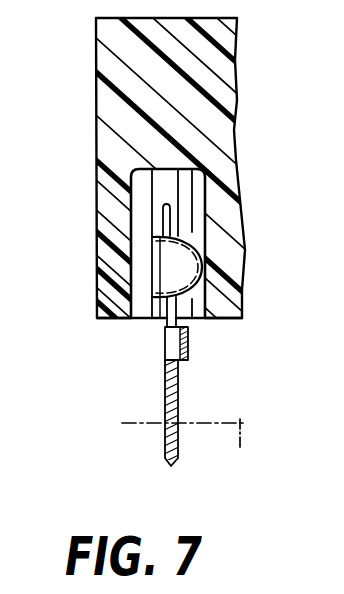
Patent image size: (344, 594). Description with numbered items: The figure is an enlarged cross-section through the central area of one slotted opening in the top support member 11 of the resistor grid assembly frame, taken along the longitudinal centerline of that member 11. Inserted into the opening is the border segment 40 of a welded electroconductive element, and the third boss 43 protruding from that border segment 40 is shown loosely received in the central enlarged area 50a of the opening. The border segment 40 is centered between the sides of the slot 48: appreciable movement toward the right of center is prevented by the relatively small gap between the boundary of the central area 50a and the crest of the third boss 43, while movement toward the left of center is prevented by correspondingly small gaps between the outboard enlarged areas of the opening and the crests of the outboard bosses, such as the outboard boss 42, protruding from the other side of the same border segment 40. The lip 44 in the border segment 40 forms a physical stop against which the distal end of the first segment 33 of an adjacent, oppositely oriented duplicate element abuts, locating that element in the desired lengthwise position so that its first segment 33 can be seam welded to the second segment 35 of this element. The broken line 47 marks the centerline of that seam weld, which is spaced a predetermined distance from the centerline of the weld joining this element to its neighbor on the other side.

The top support member 11 is at (238, 105).
The central enlarged area 50a is at (145, 197).
The outboard boss 42 is at (160, 233).
The third boss 43 is at (240, 228).
The slot 48 is at (179, 184).
The border segment 40 is at (165, 328).
The lip 44 is at (188, 346).
The second segment 35 is at (165, 408).
The first segment 33 is at (178, 392).
The centerline of the seam weld 47 is at (244, 449).